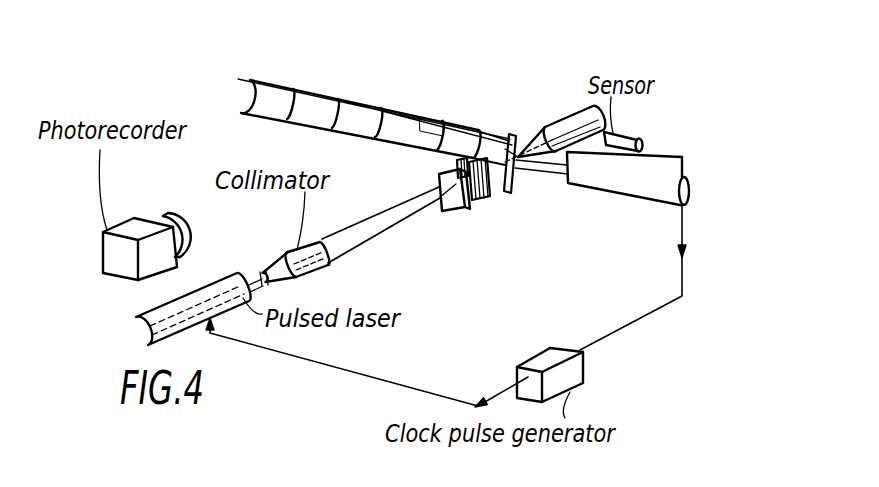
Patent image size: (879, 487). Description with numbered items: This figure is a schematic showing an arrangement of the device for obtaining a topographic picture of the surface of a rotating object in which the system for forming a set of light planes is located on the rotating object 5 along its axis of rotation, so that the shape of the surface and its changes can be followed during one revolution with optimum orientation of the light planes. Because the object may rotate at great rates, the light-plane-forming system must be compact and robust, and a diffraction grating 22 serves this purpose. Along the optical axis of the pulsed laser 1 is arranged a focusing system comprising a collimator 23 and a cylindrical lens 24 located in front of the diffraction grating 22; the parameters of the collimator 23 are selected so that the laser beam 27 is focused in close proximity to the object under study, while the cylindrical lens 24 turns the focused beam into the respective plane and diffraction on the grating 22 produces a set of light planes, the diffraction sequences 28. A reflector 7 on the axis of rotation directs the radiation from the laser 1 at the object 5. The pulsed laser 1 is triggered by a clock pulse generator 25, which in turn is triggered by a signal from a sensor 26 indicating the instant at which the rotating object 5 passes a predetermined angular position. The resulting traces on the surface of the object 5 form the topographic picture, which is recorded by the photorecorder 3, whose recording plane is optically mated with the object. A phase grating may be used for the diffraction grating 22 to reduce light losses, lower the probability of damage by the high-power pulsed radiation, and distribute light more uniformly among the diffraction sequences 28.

The pulsed laser 1 is at (202, 284).
The photorecorder 3 is at (130, 228).
The object under study 5 is at (315, 108).
The reflector 7 is at (511, 177).
The diffraction grating 22 is at (481, 203).
The collimator 23 is at (298, 252).
The cylindrical lens 24 is at (455, 208).
The clock pulse generator 25 is at (558, 357).
The sensor 26 is at (625, 138).
The laser beam 27 is at (347, 233).
The diffraction sequences 28 is at (450, 122).